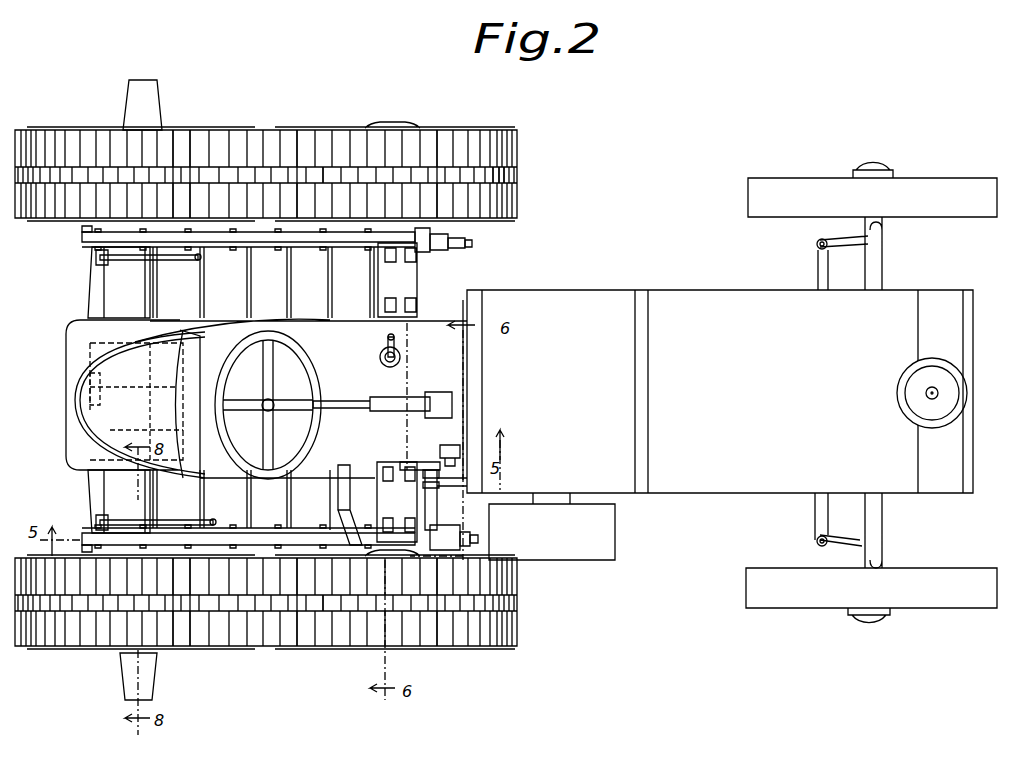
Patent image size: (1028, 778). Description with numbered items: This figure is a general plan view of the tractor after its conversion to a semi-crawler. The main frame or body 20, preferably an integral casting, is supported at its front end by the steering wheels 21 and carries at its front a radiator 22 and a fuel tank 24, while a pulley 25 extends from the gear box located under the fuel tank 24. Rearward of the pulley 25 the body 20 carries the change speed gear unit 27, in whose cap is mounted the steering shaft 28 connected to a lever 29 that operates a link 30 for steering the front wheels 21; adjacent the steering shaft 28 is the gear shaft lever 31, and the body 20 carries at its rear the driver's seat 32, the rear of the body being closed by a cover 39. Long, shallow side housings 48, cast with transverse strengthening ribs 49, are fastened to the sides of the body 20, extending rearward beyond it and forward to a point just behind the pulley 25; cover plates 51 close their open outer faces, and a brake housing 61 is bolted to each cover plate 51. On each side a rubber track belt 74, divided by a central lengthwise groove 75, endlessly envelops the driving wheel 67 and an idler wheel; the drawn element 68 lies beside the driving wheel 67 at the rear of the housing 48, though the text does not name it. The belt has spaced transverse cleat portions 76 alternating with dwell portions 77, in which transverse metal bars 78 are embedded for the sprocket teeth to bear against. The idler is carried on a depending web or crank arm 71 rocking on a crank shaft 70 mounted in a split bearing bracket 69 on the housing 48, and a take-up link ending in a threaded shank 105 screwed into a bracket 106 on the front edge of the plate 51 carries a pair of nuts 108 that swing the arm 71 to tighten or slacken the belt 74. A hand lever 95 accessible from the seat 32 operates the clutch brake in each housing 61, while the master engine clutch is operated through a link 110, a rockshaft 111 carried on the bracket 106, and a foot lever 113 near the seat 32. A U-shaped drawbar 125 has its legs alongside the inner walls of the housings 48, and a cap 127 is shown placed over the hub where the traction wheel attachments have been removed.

The main frame or body 20 is at (282, 332).
The steering wheels 21 is at (812, 184).
The radiator 22 is at (963, 300).
The fuel tank 24 is at (603, 297).
The pulley 25 is at (615, 527).
The change speed gear unit 27 is at (448, 370).
The steering shaft 28 is at (335, 402).
The lever 29 is at (452, 445).
The link 30 is at (425, 470).
The gear shaft lever 31 is at (402, 356).
The driver's seat 32 is at (105, 362).
The cover 39 is at (322, 326).
The side housings 48 is at (100, 273).
The transverse strengthening ribs 49 is at (152, 276).
The cover plates 51 is at (80, 238).
The brake housing 61 is at (92, 227).
The driving wheel 67 is at (208, 130).
The track link 68 is at (178, 128).
The split bearing bracket 69 is at (420, 268).
The crank shaft 70 is at (385, 462).
The depending web or crank arm 71 is at (385, 228).
The rubber track belt 74 is at (519, 135).
The central lengthwise groove 75 is at (330, 172).
The cleat portions 76 is at (295, 138).
The dwell portions 77 is at (465, 140).
The transverse metal bars 78 is at (497, 186).
The hand lever 95 is at (199, 259).
The threaded shank 105 is at (478, 546).
The bracket 106 is at (455, 526).
The nuts 108 is at (465, 538).
The link 110 is at (470, 474).
The rockshaft 111 is at (432, 508).
The foot lever 113 is at (338, 482).
The drawbar 125 is at (82, 330).
The cap 127 is at (152, 96).